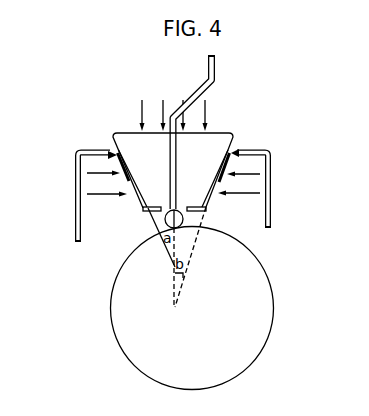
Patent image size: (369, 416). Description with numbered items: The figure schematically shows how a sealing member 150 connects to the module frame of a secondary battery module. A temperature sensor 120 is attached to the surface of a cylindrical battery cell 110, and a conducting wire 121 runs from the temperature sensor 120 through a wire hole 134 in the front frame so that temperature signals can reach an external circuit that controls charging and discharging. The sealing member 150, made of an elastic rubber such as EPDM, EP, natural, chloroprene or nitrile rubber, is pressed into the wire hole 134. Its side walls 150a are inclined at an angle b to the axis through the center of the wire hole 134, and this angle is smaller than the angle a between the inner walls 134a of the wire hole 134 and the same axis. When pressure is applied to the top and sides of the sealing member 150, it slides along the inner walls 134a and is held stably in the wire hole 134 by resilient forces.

The battery cell 110 is at (285, 298).
The temperature sensor 120 is at (165, 222).
The conducting wire 121 is at (217, 63).
The wire hole 134 is at (75, 218).
The inner wall 134a is at (108, 182).
The sealing member 150 is at (221, 134).
The side wall 150a is at (250, 155).